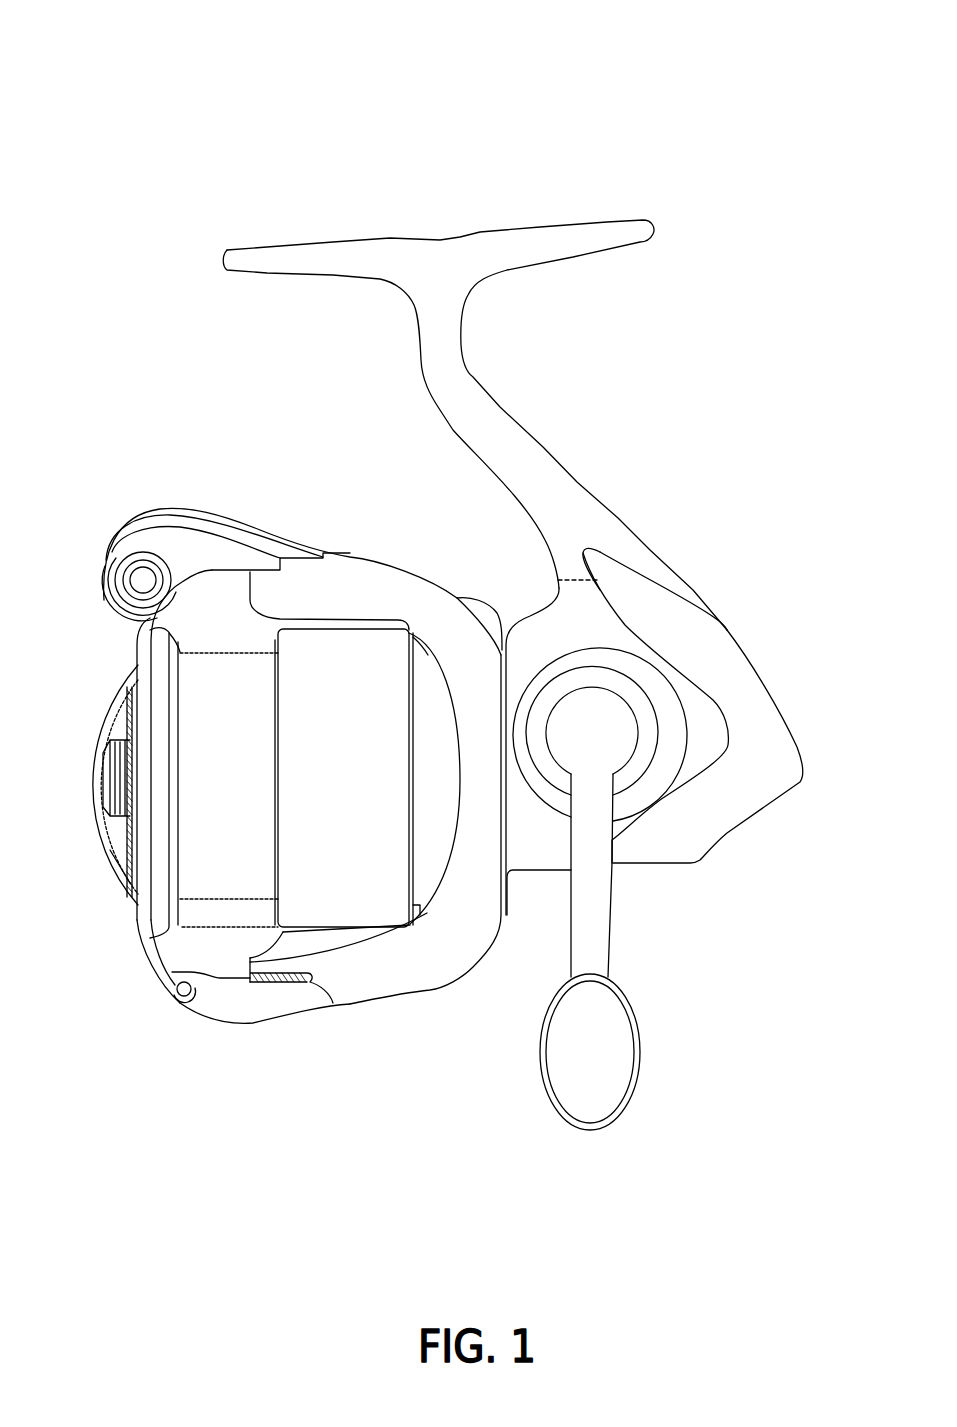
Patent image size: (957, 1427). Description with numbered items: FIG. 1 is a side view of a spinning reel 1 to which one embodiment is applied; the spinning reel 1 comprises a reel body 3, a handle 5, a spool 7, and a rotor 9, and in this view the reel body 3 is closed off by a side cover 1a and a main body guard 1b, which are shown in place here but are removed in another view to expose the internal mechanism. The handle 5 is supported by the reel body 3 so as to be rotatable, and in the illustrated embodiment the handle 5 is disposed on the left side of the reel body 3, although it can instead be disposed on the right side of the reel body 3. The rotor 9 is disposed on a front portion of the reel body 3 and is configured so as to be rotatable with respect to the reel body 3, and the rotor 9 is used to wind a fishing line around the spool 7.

The spinning reel 1 is at (578, 138).
The side cover 1a is at (543, 847).
The main body guard 1b is at (737, 808).
The reel body 3 is at (660, 535).
The handle 5 is at (620, 900).
The spool 7 is at (212, 632).
The rotor 9 is at (238, 1047).